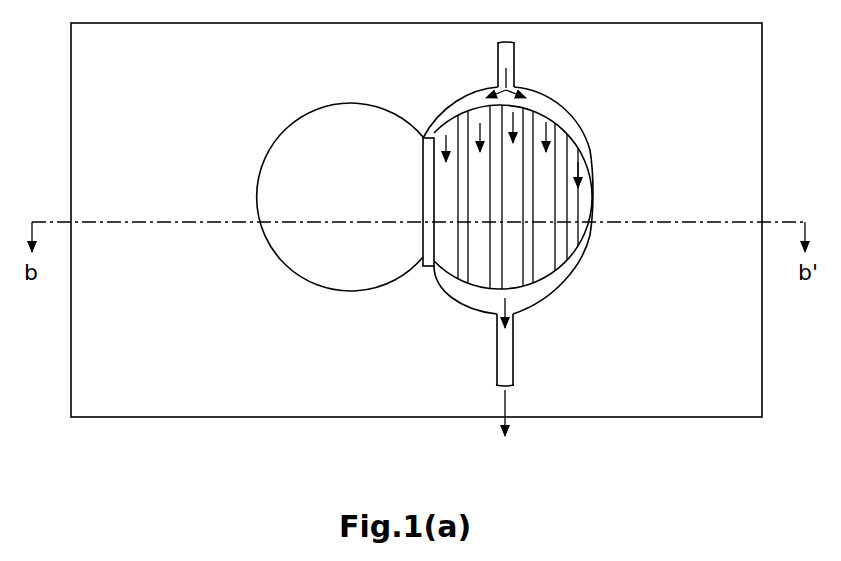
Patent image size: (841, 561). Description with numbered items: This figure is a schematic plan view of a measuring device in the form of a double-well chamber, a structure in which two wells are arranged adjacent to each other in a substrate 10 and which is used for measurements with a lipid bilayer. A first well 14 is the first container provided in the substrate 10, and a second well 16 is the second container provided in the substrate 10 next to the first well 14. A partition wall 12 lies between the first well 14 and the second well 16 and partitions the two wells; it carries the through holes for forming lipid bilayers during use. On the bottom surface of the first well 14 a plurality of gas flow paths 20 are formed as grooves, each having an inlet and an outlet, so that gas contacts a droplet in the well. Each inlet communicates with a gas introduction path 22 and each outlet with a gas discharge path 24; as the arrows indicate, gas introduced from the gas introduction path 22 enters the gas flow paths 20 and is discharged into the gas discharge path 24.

The substrate 10 is at (600, 338).
The partition wall 12 is at (431, 228).
The first well 14 is at (558, 210).
The second well 16 is at (318, 242).
The gas flow paths 20 is at (513, 254).
The gas introduction path 22 is at (507, 55).
The gas discharge path 24 is at (505, 365).